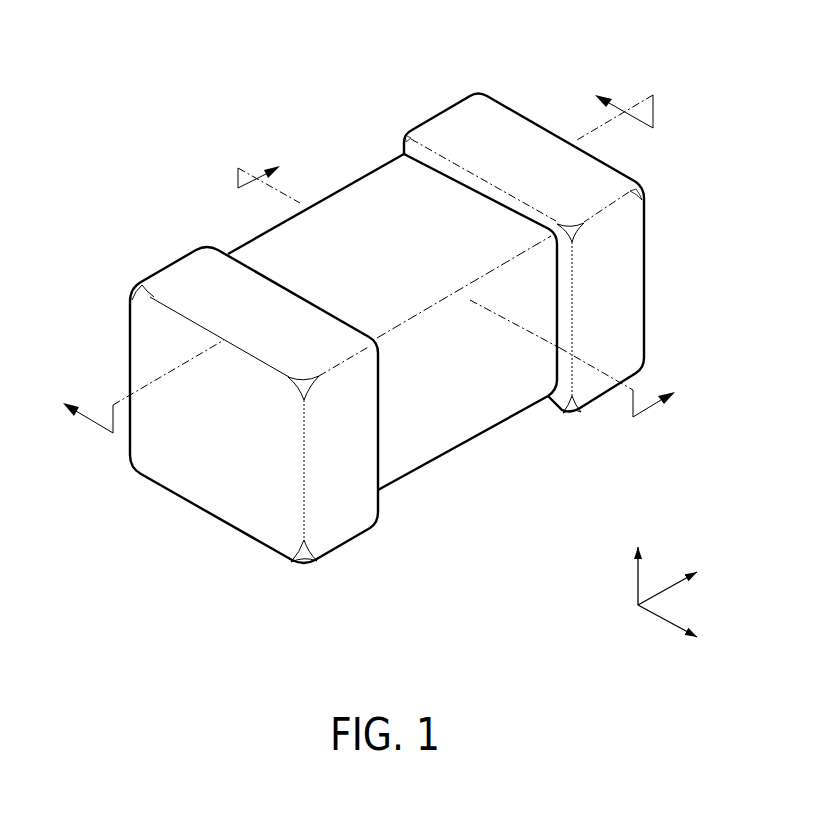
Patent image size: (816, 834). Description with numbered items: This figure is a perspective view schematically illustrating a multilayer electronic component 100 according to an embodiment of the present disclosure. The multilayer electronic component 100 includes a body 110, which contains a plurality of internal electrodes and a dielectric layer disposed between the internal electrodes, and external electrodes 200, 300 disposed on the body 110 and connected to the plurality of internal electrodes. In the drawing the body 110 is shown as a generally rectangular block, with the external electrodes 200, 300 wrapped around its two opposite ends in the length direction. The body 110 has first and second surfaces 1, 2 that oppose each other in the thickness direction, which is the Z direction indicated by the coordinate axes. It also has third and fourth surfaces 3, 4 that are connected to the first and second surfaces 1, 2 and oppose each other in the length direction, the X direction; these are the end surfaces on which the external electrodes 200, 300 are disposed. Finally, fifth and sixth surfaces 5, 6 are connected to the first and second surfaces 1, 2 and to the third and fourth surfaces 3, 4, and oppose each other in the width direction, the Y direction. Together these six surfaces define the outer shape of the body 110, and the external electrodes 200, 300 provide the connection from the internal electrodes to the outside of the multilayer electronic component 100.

The multilayer electronic component 100 is at (212, 33).
The body 110 is at (260, 257).
The external electrode 200 is at (177, 275).
The external electrode 300 is at (450, 118).
The first surface 1 is at (410, 433).
The second surface 2 is at (400, 203).
The third surface 3 is at (203, 455).
The fourth surface 4 is at (600, 272).
The fifth surface 5 is at (478, 386).
The sixth surface 6 is at (357, 232).